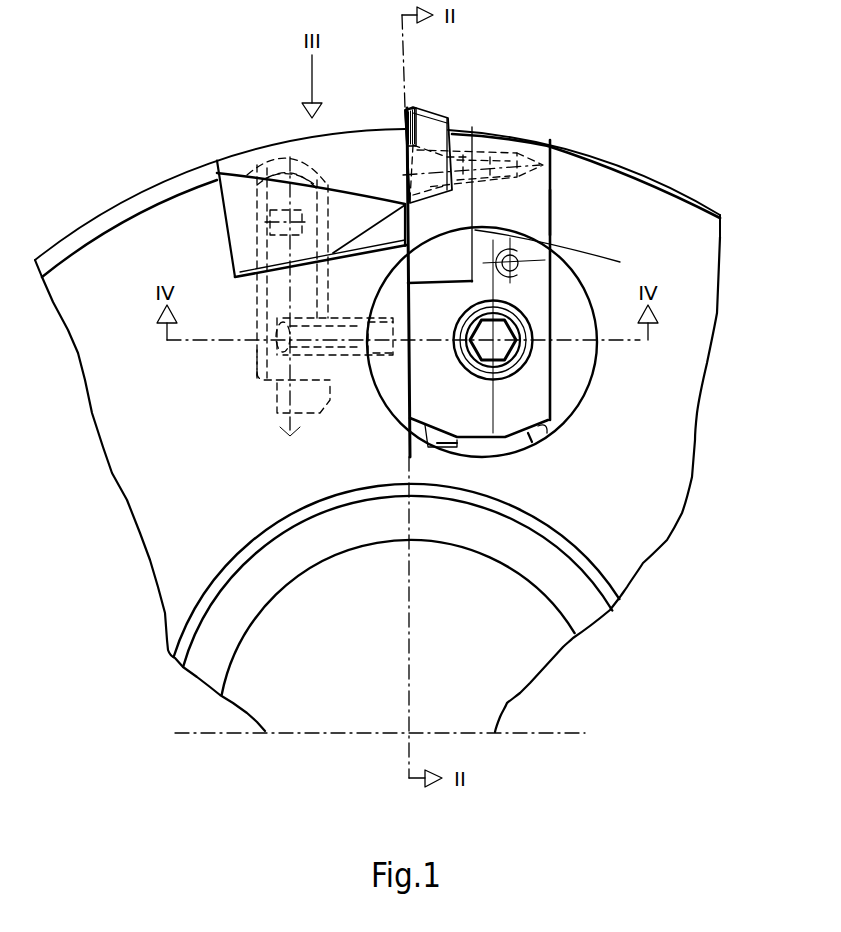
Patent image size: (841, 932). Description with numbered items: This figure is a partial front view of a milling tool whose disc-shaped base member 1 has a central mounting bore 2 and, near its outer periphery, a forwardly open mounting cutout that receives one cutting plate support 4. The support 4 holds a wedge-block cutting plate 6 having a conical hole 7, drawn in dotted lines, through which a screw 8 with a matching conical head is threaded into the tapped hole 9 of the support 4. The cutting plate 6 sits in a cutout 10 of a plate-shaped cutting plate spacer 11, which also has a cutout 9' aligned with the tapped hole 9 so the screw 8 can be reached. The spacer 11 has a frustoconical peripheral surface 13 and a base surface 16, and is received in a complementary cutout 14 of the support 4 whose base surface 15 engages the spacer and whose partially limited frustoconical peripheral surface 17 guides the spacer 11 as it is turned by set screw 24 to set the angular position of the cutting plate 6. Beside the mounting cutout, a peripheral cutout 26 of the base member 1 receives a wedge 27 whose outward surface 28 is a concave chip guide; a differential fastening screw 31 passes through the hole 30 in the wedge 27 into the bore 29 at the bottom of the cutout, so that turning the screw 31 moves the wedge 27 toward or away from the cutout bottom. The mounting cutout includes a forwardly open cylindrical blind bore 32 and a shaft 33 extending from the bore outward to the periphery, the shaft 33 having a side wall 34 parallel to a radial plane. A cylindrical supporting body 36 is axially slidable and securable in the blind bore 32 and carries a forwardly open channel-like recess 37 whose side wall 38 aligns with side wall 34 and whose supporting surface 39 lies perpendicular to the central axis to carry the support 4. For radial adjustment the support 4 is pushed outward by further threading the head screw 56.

The base member 1 is at (92, 263).
The mounting bore 2 is at (487, 683).
The cutting plate support 4 is at (553, 218).
The cutting plate 6 is at (430, 127).
The conical hole 7 is at (404, 200).
The screw 8 is at (503, 175).
The tapped hole 9 is at (496, 109).
The cutout 9' is at (474, 110).
The cutout 10 is at (457, 207).
The cutting plate spacer 11 is at (395, 335).
The peripheral surface 13 is at (335, 357).
The complementary cutout 14 is at (446, 286).
The base surface 15 is at (545, 260).
The base surface 16 is at (437, 262).
The peripheral surface 17 is at (472, 280).
The set screw 24 is at (620, 262).
The cutout 26 is at (247, 255).
The wedge 27 is at (251, 251).
The surface 28 is at (357, 200).
The bore 29 is at (260, 347).
The hole 30 is at (268, 222).
The fastening screw 31 is at (270, 153).
The blind bore 32 is at (458, 446).
The shaft 33 is at (565, 238).
The side wall 34 is at (552, 214).
The supporting body 36 is at (563, 390).
The channel-like recess 37 is at (540, 460).
The side wall 38 is at (537, 442).
The supporting surface 39 is at (537, 432).
The head screw 56 is at (427, 442).